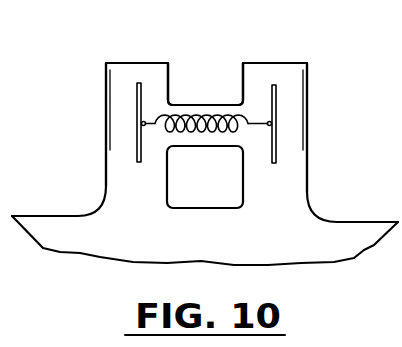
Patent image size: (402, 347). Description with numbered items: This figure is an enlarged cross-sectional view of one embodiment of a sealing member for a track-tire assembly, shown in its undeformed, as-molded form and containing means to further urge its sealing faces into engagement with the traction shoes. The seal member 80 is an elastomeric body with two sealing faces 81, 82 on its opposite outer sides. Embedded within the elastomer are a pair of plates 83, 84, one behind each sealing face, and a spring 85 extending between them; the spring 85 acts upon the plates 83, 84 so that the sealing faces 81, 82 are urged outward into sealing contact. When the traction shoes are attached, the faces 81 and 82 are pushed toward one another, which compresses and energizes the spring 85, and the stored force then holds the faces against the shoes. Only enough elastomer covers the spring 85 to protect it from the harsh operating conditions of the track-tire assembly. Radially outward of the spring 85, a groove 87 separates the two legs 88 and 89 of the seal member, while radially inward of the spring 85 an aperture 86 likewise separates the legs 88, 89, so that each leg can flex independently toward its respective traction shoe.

The seal member 80 is at (120, 179).
The sealing face 81 is at (106, 133).
The sealing face 82 is at (306, 155).
The plate 83 is at (130, 88).
The plate 84 is at (278, 97).
The spring 85 is at (206, 115).
The aperture 86 is at (227, 192).
The groove 87 is at (170, 88).
The leg 88 is at (120, 105).
The leg 89 is at (291, 115).